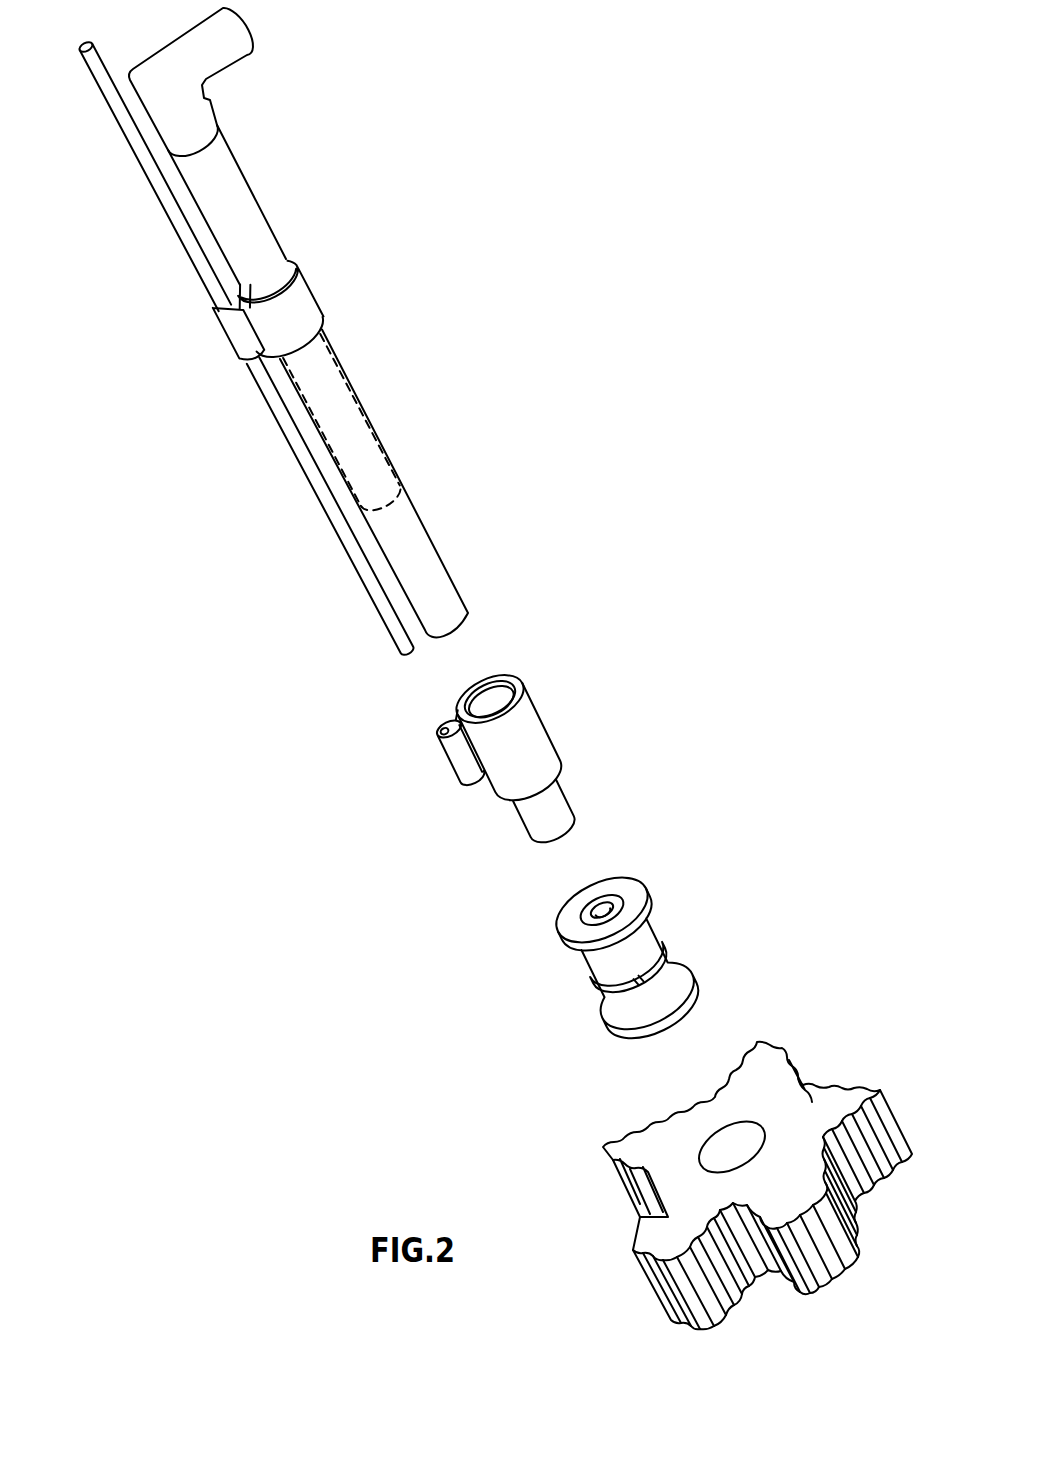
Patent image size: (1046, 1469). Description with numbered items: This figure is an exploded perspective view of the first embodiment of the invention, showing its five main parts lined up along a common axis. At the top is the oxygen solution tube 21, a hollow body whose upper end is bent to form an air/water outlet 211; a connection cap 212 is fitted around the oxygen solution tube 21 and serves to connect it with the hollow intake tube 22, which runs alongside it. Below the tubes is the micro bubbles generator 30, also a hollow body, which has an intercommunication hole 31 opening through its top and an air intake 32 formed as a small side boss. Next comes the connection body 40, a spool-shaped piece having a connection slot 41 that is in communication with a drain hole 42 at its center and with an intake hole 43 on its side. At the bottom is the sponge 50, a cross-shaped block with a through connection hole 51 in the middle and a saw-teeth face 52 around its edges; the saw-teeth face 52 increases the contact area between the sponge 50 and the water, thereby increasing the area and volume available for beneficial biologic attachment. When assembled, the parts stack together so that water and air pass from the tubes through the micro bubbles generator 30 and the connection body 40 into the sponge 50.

The oxygen solution tube 21 is at (420, 558).
The air/water outlet 211 is at (255, 27).
The connection cap 212 is at (298, 302).
The intake tube 22 is at (377, 597).
The micro bubbles generator 30 is at (532, 748).
The intercommunication hole 31 is at (485, 695).
The air intake 32 is at (440, 733).
The connection body 40 is at (667, 930).
The connection slot 41 is at (622, 897).
The drain hole 42 is at (602, 907).
The intake hole 43 is at (667, 953).
The sponge 50 is at (759, 1159).
The connection hole 51 is at (733, 1137).
The saw-teeth face 52 is at (843, 1237).